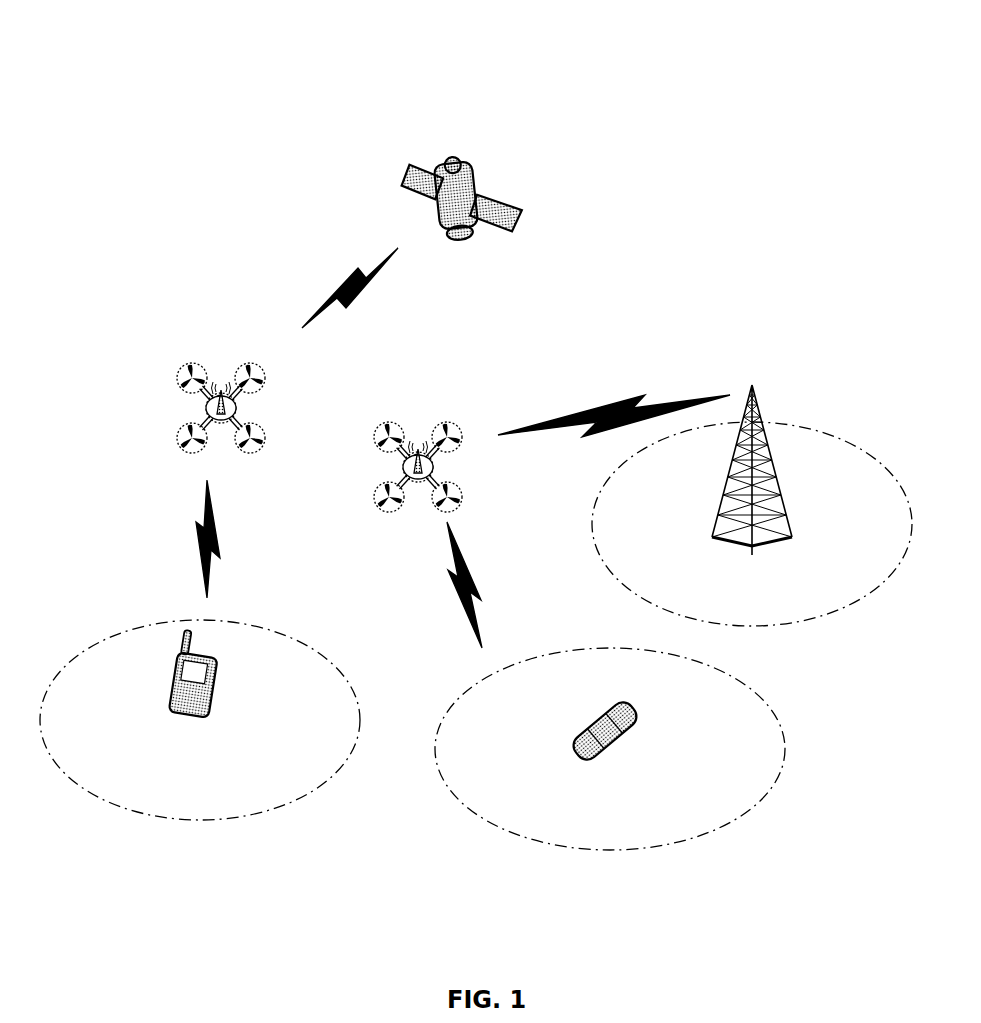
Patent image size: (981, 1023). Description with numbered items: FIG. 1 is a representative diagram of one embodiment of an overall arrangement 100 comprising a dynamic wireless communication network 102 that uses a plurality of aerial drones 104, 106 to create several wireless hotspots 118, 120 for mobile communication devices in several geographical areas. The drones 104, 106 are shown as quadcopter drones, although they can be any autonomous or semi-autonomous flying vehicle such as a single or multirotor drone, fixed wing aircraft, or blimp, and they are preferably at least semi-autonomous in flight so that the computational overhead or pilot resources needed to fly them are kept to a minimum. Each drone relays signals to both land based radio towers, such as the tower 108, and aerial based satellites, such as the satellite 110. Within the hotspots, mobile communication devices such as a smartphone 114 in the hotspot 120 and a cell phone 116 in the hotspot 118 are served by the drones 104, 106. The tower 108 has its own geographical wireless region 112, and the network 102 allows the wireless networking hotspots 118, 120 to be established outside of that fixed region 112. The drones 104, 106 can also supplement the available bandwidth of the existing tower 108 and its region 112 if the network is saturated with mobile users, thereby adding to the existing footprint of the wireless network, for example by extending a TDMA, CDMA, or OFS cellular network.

The communication system 100 is at (226, 52).
The dynamic wireless communication network 102 is at (643, 262).
The aerial drone 104 is at (195, 366).
The aerial drone 106 is at (388, 425).
The tower 108 is at (764, 466).
The satellite 110 is at (468, 162).
The geographical wireless region 112 is at (792, 628).
The smartphone 114 is at (215, 663).
The cell phone 116 is at (637, 722).
The wireless hotspot 118 is at (678, 852).
The wireless hotspot 120 is at (222, 822).